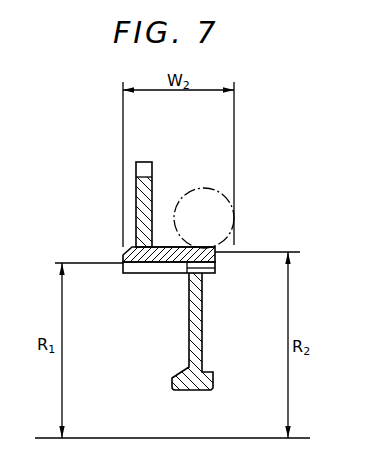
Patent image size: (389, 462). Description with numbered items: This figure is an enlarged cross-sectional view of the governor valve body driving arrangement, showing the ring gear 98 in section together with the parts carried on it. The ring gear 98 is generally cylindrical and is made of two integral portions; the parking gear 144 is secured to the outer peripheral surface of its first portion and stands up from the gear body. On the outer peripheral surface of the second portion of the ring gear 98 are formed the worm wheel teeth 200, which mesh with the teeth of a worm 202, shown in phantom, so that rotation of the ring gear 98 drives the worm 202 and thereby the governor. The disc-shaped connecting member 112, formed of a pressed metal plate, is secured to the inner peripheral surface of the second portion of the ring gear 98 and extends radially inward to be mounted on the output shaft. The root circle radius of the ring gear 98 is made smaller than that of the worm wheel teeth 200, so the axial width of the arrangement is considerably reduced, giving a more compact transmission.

The parking gear 144 is at (152, 172).
The worm 202 is at (218, 190).
The worm wheel teeth 200 is at (207, 244).
The ring gear 98 is at (157, 263).
The connecting member 112 is at (202, 320).